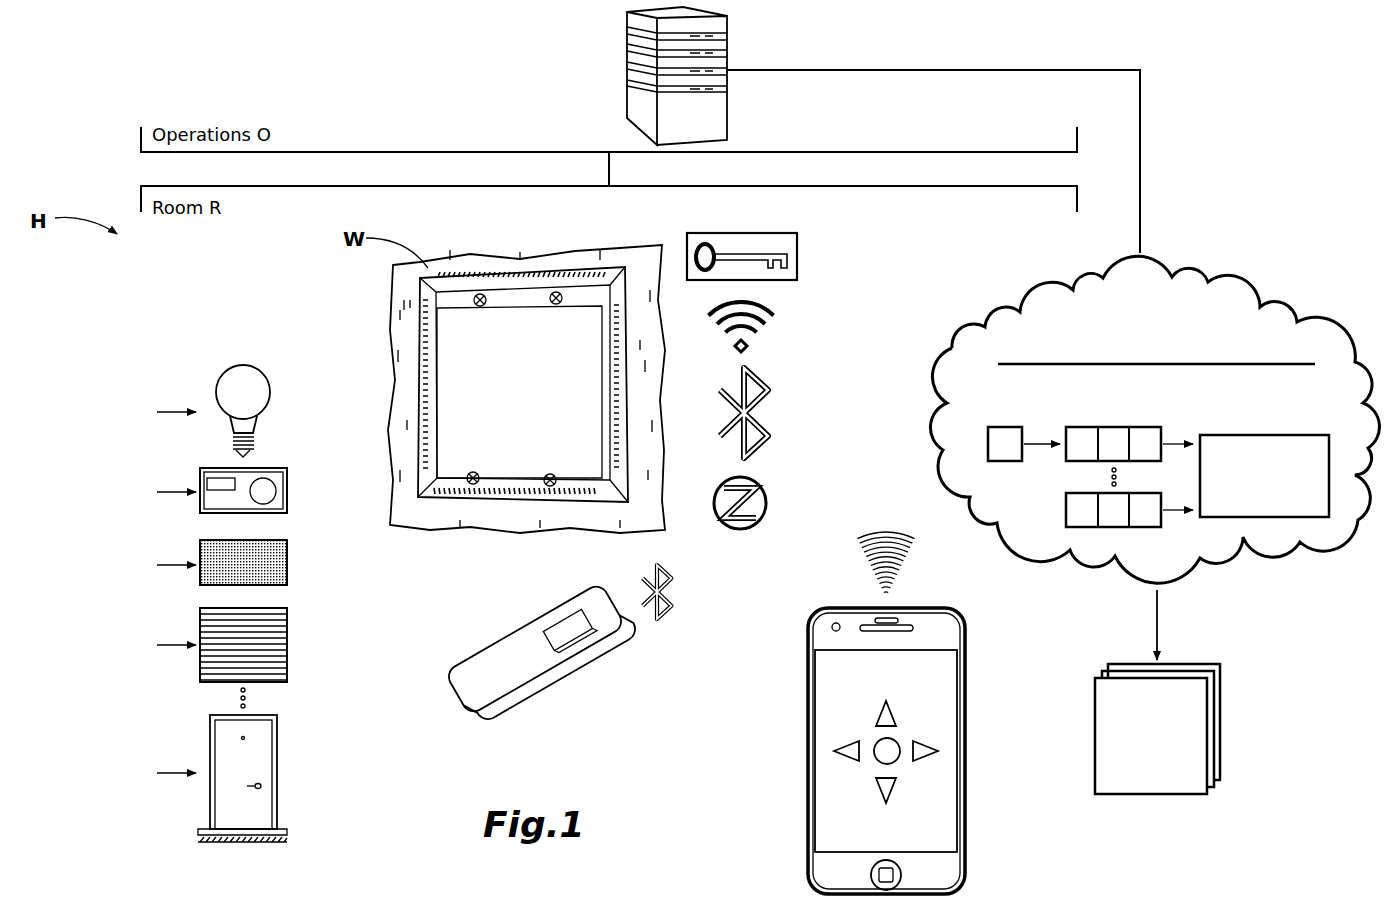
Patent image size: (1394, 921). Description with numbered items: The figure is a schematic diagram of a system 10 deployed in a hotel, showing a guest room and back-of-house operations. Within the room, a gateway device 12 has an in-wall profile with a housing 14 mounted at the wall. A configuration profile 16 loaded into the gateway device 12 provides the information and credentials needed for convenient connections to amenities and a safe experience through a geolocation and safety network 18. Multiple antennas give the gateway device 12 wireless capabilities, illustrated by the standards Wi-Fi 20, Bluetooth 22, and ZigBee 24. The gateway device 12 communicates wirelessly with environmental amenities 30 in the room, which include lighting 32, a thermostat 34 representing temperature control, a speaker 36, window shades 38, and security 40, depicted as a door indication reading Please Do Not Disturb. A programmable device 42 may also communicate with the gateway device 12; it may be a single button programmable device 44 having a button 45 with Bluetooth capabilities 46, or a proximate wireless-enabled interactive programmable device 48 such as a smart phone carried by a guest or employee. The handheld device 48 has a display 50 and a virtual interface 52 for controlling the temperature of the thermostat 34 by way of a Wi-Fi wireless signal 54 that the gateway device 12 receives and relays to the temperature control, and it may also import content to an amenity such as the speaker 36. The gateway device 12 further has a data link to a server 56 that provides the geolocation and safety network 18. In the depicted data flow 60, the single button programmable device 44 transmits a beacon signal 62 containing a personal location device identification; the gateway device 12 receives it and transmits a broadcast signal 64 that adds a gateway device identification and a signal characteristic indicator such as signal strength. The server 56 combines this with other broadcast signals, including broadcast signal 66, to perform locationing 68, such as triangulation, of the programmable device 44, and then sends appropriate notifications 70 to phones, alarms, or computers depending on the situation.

The system 10 is at (1207, 122).
The gateway device 12 is at (416, 328).
The housing 14 is at (420, 382).
The configuration profile 16 is at (797, 257).
The geolocation and safety network 18 is at (1250, 279).
The Wi-Fi 20 is at (758, 322).
The Bluetooth 22 is at (762, 405).
The ZigBee 24 is at (766, 503).
The amenities 30 is at (324, 708).
The lighting 32 is at (271, 395).
The thermostat 34 is at (287, 492).
The speaker 36 is at (287, 565).
The window shades 38 is at (287, 645).
The security 40 is at (277, 773).
The programmable device 42 is at (682, 724).
The single button programmable device 44 is at (563, 680).
The button 45 is at (548, 627).
The Bluetooth capabilities 46 is at (676, 590).
The proximate wireless-enabled interactive programmable device 48 is at (965, 792).
The display 50 is at (948, 715).
The virtual interface 52 is at (827, 778).
The Wi-Fi wireless signal 54 is at (889, 531).
The server 56 is at (632, 100).
The data flow 60 is at (1152, 411).
The beacon signal 62 is at (1009, 427).
The broadcast signal 64 is at (1112, 427).
The broadcast signal 66 is at (1066, 511).
The locationing 68 is at (1269, 435).
The notifications 70 is at (1220, 733).